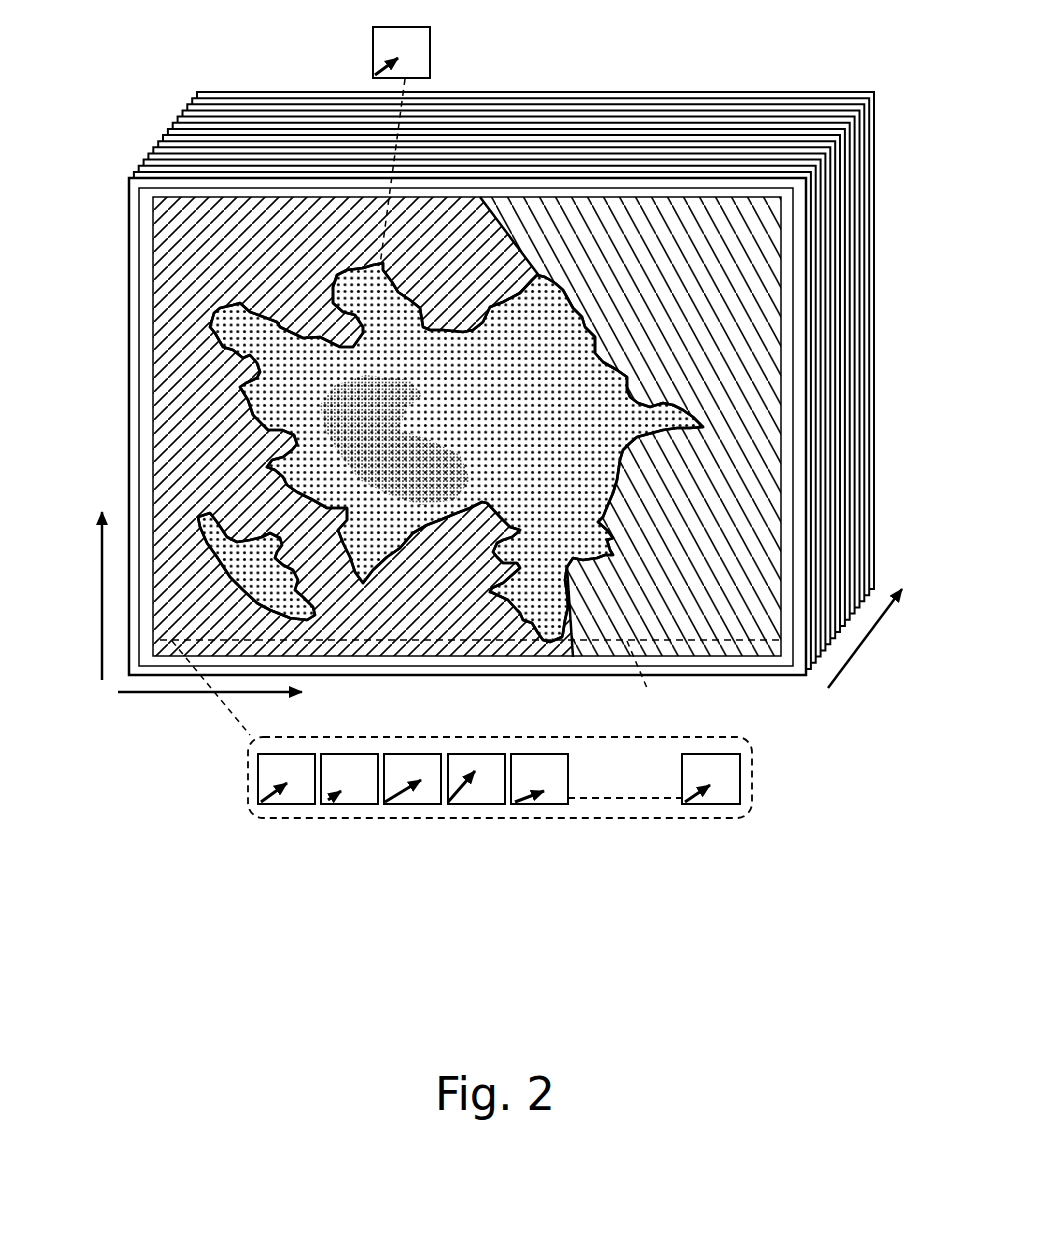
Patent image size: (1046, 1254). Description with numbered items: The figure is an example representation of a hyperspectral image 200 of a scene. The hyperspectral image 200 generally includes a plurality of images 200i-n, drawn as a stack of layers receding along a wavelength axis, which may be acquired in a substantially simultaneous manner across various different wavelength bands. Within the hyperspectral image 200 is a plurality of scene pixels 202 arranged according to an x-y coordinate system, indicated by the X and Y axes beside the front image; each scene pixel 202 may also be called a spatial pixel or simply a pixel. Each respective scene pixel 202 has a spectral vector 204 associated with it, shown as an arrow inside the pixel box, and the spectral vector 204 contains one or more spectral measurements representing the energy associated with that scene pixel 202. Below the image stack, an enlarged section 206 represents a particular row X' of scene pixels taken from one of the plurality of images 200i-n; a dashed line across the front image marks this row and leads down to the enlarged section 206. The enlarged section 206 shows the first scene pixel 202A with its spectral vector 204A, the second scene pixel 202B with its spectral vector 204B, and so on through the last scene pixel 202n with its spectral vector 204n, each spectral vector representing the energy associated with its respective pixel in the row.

The hyperspectral image 200 is at (185, 294).
The plurality of images 200i-n is at (184, 89).
The scene pixel 202 is at (432, 38).
The spectral vector 204 is at (372, 67).
The scene pixel 202A is at (282, 805).
The spectral vector 204A is at (262, 800).
The scene pixel 202B is at (357, 805).
The spectral vector 204B is at (329, 805).
The scene pixel 202n is at (745, 790).
The spectral vector 204n is at (687, 803).
The enlarged section 206 is at (530, 820).